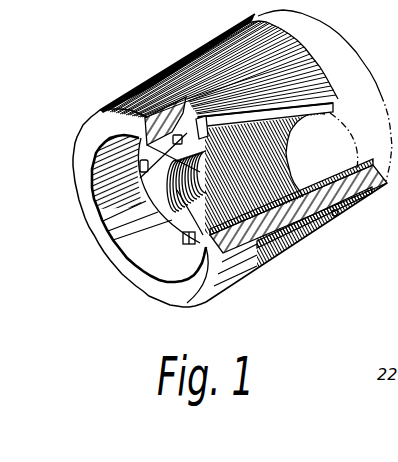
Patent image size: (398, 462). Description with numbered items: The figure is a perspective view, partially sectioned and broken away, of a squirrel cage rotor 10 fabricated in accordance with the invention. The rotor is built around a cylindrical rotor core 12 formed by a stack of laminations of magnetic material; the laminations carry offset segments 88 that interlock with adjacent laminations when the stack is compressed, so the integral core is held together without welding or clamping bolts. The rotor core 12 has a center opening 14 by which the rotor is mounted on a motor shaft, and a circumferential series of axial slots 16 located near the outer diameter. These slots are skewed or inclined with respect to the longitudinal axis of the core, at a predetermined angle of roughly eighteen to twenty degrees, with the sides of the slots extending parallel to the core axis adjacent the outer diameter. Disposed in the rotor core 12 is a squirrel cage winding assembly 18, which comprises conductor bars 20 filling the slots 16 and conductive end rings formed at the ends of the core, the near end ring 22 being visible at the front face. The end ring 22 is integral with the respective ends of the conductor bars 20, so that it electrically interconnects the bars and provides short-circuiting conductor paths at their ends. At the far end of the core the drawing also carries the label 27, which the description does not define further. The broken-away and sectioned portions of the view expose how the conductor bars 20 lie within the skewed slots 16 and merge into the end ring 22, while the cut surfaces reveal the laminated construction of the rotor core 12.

The squirrel cage rotor 10 is at (166, 63).
The cylindrical rotor core 12 is at (277, 270).
The center opening 14 is at (173, 212).
The axial slots 16 is at (340, 216).
The squirrel cage winding assembly 18 is at (85, 218).
The conductor bars 20 is at (272, 110).
The end ring 22 is at (116, 262).
The rear flange 27 is at (352, 62).
The offset segments 88 is at (146, 170).